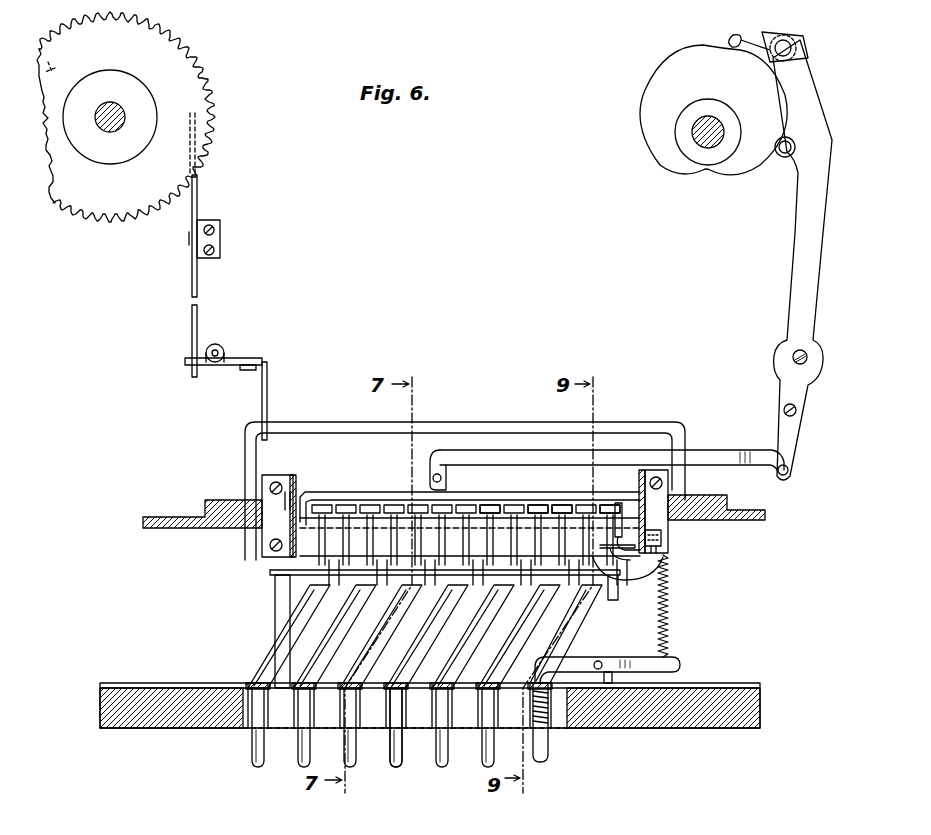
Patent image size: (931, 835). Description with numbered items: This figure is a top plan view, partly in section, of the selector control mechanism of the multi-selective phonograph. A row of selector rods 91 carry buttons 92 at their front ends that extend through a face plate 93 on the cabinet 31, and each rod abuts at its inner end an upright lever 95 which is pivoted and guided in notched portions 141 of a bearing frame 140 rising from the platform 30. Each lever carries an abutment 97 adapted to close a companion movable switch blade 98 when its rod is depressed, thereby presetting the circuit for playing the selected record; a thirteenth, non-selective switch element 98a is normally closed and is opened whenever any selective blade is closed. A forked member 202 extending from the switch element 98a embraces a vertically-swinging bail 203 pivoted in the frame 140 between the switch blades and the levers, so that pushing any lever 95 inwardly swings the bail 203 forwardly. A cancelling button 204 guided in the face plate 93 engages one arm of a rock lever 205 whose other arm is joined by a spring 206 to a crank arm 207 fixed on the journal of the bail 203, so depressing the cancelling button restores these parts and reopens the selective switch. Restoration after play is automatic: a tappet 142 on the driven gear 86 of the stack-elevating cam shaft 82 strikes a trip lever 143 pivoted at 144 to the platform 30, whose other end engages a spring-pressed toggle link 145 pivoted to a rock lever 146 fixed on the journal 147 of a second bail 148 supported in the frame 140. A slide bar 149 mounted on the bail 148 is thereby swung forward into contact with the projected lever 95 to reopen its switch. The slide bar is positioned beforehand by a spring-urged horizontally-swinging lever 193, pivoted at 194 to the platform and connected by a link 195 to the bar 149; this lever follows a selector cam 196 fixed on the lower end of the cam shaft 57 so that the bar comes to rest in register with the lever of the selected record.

The driven gear 86 is at (214, 100).
The stack-elevating cam shaft 82 is at (120, 92).
The tappet 142 is at (52, 63).
The trip lever 143 is at (199, 196).
The pivot 144 is at (190, 254).
The toggle or link 145 is at (187, 363).
The rock lever 146 is at (268, 406).
The journal 147 is at (292, 492).
The bail or crank 148 is at (382, 492).
The link 195 is at (718, 453).
The horizontally-swinging lever 193 is at (797, 272).
The pivot 194 is at (802, 22).
The selector cam 196 is at (713, 110).
The cam shaft 57 is at (710, 146).
The bearing frame 140 is at (290, 532).
The platform 30 is at (767, 520).
The abutment or projection 97 is at (315, 512).
The slide bar 149 is at (485, 505).
The upright lever 95 is at (541, 505).
The movable switch blade 98 is at (573, 505).
The non-selective switch element 98a is at (605, 505).
The notched portions 141 is at (282, 574).
The selector rod 91 is at (350, 625).
The cabinet 31 is at (717, 724).
The face plate 93 is at (246, 740).
The button or head 92 is at (405, 764).
The cancelling rod or button 204 is at (552, 750).
The rock lever 205 is at (632, 650).
The spring 206 is at (672, 613).
The forked member 202 is at (625, 547).
The bail or crank 203 is at (668, 566).
The crank arm 207 is at (663, 540).